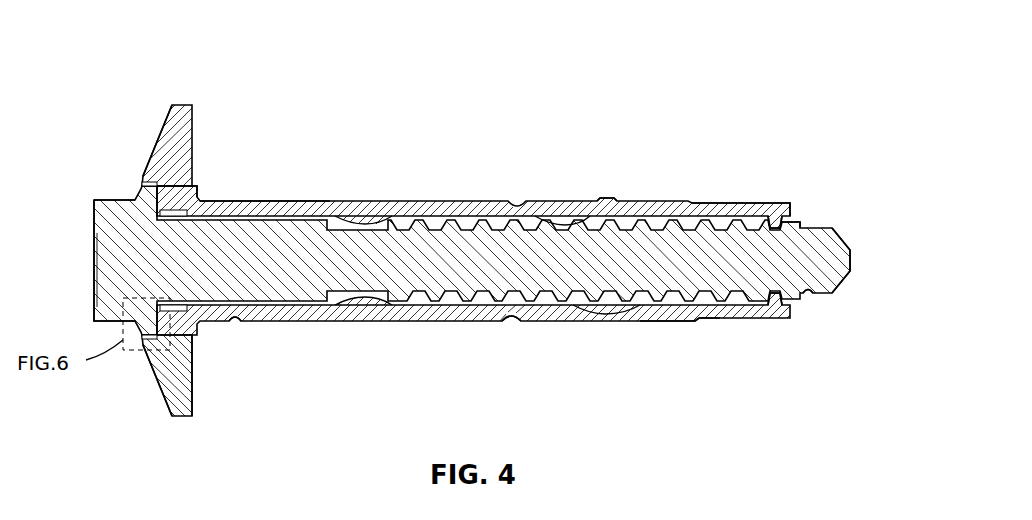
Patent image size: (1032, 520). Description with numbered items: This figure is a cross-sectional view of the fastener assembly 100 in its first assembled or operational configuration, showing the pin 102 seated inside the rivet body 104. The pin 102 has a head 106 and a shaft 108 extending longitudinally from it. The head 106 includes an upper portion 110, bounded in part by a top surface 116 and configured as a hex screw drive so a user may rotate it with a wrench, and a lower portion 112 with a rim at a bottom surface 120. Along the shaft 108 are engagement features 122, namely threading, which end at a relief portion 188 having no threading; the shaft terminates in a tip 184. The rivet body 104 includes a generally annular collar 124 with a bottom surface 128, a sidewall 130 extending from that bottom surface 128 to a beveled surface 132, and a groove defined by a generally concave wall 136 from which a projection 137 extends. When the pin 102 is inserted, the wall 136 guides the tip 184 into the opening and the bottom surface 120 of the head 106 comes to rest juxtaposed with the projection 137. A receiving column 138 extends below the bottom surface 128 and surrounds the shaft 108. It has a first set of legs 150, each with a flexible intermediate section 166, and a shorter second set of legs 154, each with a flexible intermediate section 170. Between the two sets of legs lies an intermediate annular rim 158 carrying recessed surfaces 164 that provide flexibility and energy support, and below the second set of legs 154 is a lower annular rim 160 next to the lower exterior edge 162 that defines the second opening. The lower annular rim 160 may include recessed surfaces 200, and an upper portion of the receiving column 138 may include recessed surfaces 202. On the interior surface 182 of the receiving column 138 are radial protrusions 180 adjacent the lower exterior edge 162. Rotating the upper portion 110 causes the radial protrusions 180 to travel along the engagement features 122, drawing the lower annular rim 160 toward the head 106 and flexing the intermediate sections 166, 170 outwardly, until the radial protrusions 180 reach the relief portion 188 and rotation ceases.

The fastener assembly 100 is at (140, 53).
The pin 102 is at (117, 203).
The rivet body 104 is at (475, 202).
The head 106 is at (95, 313).
The shaft 108 is at (377, 223).
The upper portion 110 is at (95, 200).
The lower portion 112 is at (145, 172).
The top surface 116 is at (95, 250).
The bottom surface 120 is at (172, 198).
The engagement features 122 is at (807, 297).
The collar 124 is at (182, 105).
The bottom surface 128 is at (194, 370).
The sidewall 130 is at (176, 417).
The beveled surface 132 is at (148, 372).
The wall 136 is at (160, 190).
The projection 137 is at (157, 207).
The receiving column 138 is at (678, 314).
The first set of legs 150 is at (315, 202).
The second set of legs 154 is at (567, 320).
The intermediate annular rim 158 is at (513, 308).
The lower annular rim 160 is at (712, 208).
The lower exterior edge 162 is at (793, 210).
The recessed surfaces 164 is at (537, 205).
The flexible intermediate section 166 is at (370, 203).
The flexible intermediate section 170 is at (610, 200).
The radial protrusions 180 is at (775, 223).
The interior surface 182 is at (727, 308).
The tip 184 is at (853, 258).
The relief portion 188 is at (375, 278).
The recessed surfaces 200 is at (685, 318).
The recessed surfaces 202 is at (235, 320).